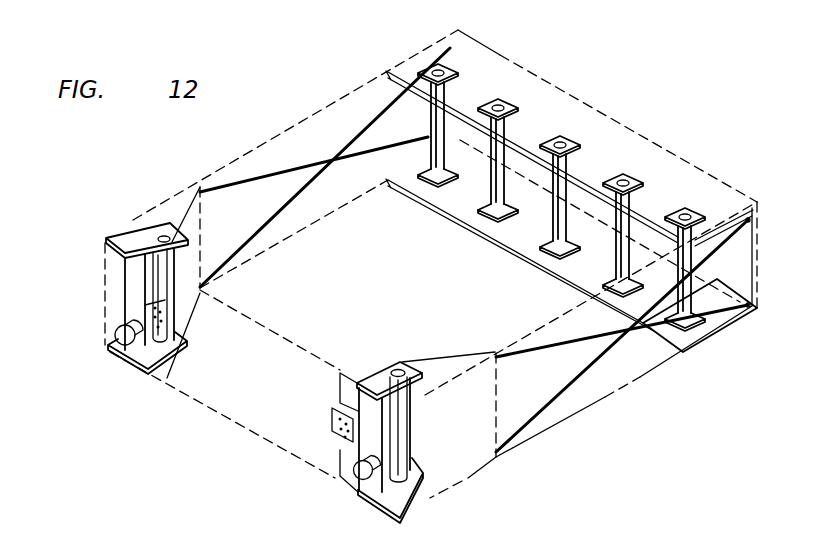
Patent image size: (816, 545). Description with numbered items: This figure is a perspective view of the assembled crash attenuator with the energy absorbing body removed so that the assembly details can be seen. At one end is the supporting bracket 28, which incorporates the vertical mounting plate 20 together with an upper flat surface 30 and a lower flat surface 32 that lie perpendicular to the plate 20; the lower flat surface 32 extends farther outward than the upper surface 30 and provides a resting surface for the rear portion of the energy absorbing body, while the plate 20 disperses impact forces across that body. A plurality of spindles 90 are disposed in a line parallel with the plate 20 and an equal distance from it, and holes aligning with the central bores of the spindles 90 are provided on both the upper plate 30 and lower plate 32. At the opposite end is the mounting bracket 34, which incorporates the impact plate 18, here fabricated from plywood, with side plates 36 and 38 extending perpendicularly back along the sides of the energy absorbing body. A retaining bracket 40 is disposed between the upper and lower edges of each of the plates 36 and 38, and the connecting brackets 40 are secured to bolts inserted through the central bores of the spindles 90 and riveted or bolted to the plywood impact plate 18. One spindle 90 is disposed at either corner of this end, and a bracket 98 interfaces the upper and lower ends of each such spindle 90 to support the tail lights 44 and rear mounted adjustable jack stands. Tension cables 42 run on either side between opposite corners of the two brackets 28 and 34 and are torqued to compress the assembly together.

The impact plate 18 is at (216, 393).
The mounting plate 20 is at (758, 260).
The supporting bracket 28 is at (566, 84).
The upper flat surface 30 is at (653, 147).
The lower flat surface 32 is at (737, 323).
The mounting bracket 34 is at (92, 287).
The plate 36 is at (450, 475).
The plate 38 is at (137, 218).
The retaining bracket 40 is at (163, 207).
The tension cable 42 is at (300, 170).
The tail light 44 is at (118, 350).
The spindle 90 is at (557, 232).
The bracket 98 is at (130, 300).